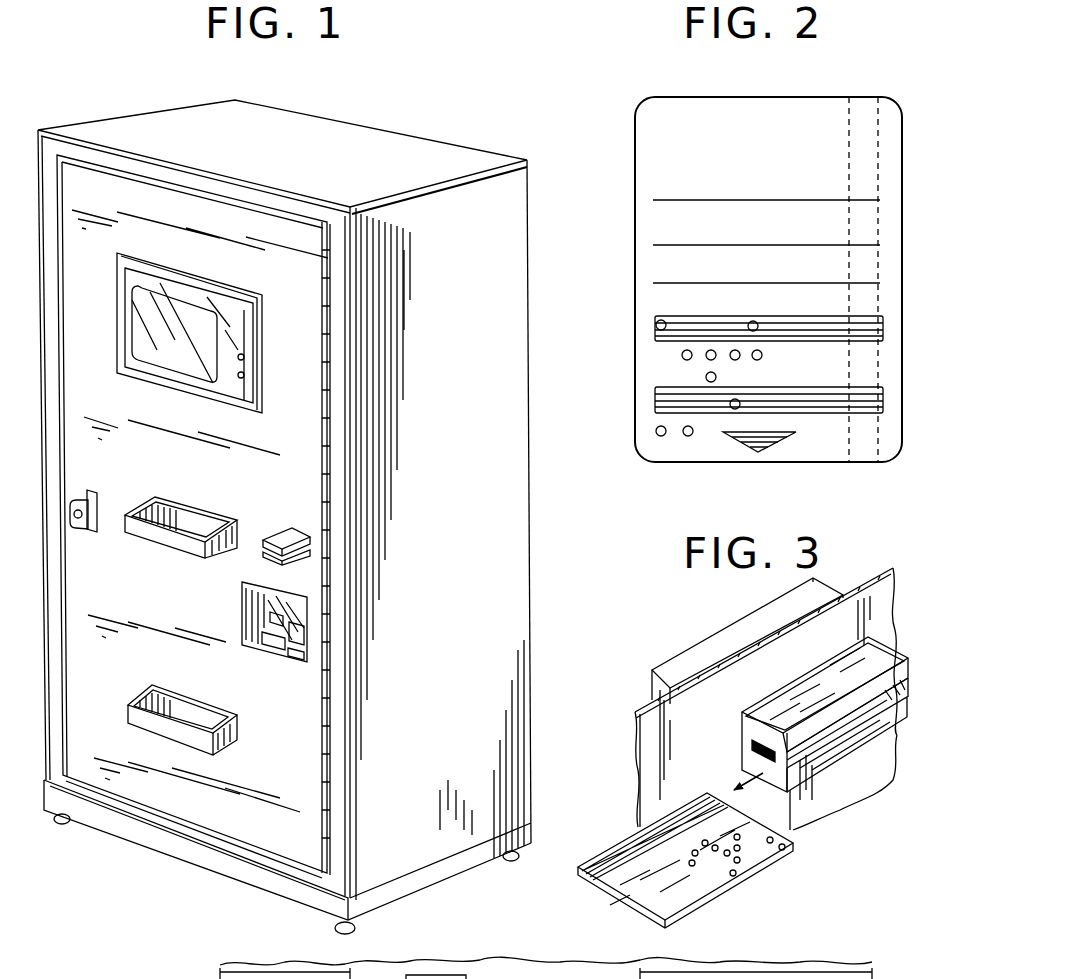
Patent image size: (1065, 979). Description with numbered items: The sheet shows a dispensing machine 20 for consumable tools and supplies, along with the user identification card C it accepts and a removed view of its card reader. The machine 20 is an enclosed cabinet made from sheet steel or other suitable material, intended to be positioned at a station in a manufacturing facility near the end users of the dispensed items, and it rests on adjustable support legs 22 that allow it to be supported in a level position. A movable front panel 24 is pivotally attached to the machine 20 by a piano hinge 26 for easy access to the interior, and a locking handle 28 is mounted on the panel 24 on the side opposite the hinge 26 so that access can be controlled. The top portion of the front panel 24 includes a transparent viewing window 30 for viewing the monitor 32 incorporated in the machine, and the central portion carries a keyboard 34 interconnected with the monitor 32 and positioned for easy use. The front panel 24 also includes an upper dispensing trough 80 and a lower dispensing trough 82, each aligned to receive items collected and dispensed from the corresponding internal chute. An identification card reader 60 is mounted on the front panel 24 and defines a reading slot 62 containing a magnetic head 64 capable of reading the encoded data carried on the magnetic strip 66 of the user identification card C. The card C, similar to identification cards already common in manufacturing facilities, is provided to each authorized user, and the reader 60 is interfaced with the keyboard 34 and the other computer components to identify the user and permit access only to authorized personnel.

In FIG. 1, the dispensing machine 20 is at (366, 146).
In FIG. 1, the adjustable support legs 22 is at (62, 826).
In FIG. 1, the movable front panel 24 is at (238, 231).
In FIG. 1, the piano hinge 26 is at (330, 470).
In FIG. 1, the locking handle 28 is at (93, 492).
In FIG. 1, the transparent viewing window 30 is at (262, 306).
In FIG. 1, the monitor 32 is at (174, 336).
In FIG. 1, the keyboard 34 is at (262, 601).
In FIG. 1, the identification card reader 60 is at (291, 533).
In FIG. 3, the identification card reader 60 is at (880, 656).
In FIG. 3, the reading slot 62 is at (892, 694).
In FIG. 3, the magnetic head 64 is at (863, 722).
In FIG. 2, the magnetic strip 66 is at (862, 133).
In FIG. 3, the magnetic strip 66 is at (617, 862).
In FIG. 1, the upper dispensing trough 80 is at (168, 538).
In FIG. 1, the lower dispensing trough 82 is at (134, 722).
In FIG. 2, the user identification card C is at (655, 122).
In FIG. 3, the user identification card C is at (708, 890).